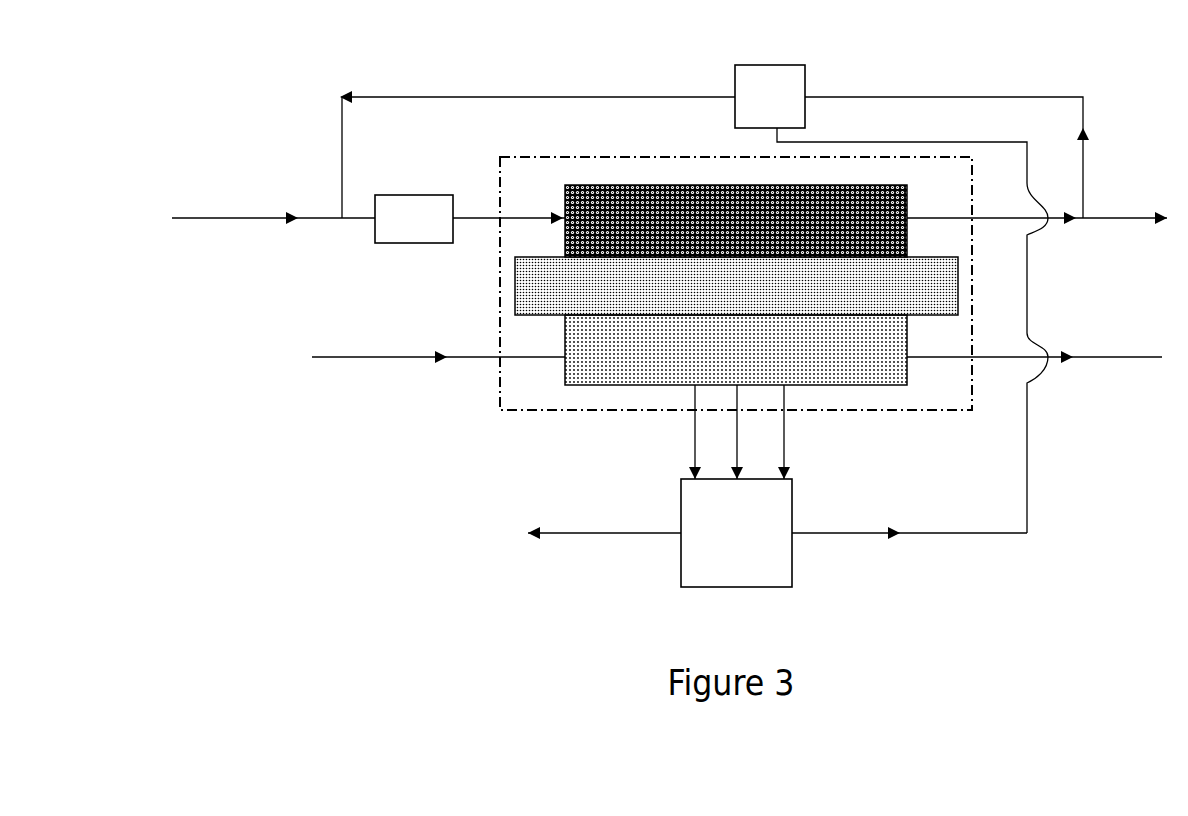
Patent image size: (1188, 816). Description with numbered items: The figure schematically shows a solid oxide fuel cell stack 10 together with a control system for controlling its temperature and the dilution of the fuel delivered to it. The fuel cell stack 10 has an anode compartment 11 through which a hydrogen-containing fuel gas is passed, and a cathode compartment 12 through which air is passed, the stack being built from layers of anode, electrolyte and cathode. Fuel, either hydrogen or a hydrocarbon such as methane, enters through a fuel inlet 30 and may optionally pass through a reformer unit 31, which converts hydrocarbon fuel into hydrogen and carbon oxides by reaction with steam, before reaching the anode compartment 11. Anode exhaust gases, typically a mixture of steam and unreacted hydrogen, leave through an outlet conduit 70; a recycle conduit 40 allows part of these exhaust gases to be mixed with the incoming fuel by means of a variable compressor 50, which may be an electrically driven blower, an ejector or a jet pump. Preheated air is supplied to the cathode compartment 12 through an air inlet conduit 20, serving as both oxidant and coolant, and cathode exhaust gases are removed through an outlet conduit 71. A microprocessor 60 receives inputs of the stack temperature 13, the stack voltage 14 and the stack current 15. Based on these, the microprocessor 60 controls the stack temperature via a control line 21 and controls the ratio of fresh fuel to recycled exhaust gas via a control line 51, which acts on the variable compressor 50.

The fuel cell stack 10 is at (736, 271).
The anode compartment 11 is at (736, 221).
The cathode compartment 12 is at (736, 350).
The stack temperature 13 is at (720, 432).
The stack voltage 14 is at (675, 432).
The stack current 15 is at (767, 432).
The air inlet conduit 20 is at (438, 343).
The control line 21 is at (604, 515).
The fuel inlet 30 is at (273, 200).
The reformer unit 31 is at (470, 219).
The recycle conduit 40 is at (714, 137).
The variable compressor 50 is at (770, 96).
The control line 51 is at (912, 333).
The microprocessor 60 is at (736, 533).
The outlet conduit 70 is at (1037, 207).
The outlet conduit 71 is at (1034, 346).